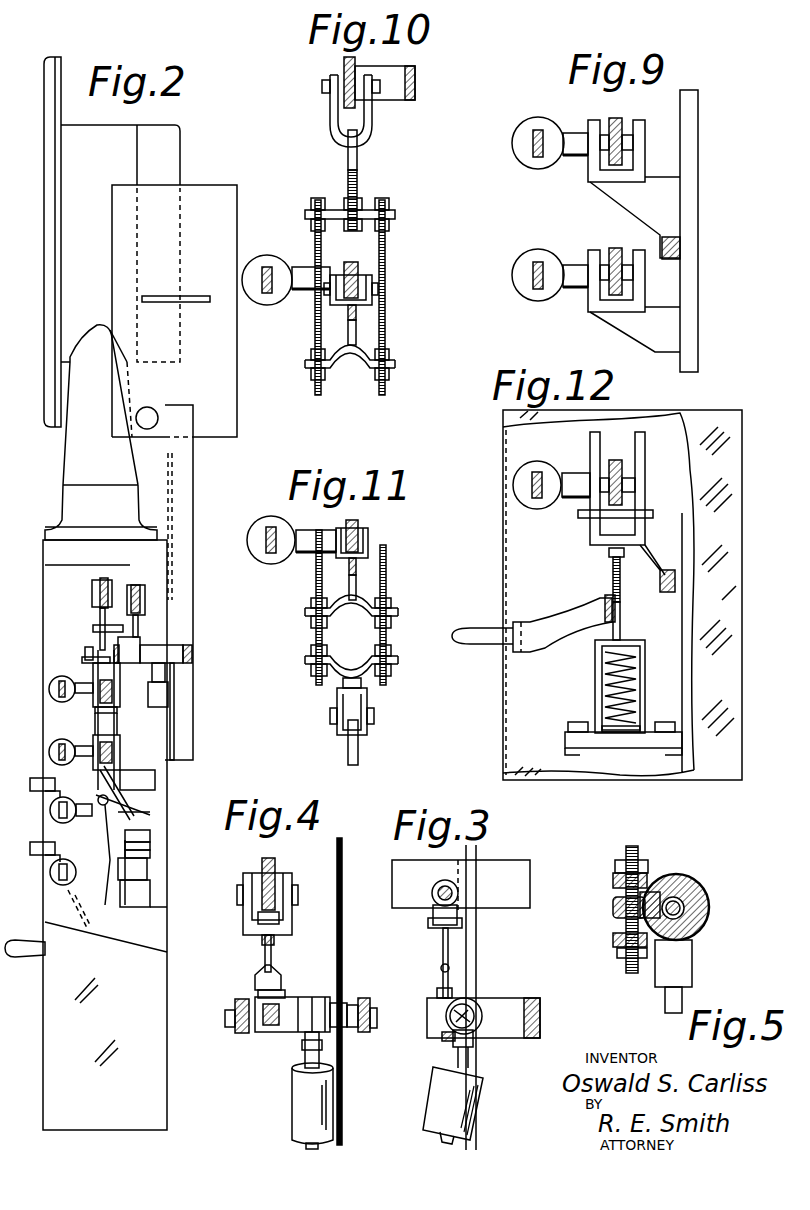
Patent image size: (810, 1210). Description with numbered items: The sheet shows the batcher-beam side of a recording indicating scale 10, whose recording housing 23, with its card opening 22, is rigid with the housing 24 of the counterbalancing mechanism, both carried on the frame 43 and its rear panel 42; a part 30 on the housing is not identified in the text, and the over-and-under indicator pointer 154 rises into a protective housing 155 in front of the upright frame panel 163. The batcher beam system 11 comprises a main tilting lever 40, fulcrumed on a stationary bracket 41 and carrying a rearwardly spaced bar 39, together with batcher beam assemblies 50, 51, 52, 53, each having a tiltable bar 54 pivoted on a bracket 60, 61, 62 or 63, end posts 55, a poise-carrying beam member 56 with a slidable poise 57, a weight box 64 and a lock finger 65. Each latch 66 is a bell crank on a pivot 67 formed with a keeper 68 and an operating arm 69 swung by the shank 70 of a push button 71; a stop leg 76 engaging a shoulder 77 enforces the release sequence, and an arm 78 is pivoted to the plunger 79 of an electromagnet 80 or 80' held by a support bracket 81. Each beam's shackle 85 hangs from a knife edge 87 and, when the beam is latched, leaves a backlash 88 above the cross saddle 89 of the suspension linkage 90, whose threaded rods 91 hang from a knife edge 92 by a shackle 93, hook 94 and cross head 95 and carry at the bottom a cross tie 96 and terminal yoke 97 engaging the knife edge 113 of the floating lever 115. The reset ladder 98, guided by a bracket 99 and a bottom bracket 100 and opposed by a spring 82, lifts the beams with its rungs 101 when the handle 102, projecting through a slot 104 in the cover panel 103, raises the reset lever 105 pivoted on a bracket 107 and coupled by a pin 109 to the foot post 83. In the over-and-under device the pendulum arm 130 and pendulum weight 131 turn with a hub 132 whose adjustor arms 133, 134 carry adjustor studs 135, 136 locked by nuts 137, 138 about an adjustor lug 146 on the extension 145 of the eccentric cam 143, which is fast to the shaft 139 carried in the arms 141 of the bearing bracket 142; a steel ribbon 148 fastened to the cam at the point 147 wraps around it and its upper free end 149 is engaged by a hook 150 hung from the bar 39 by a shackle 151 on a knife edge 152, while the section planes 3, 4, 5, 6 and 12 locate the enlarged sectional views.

In FIG. 4, the section planes 3— 3 is at (282, 1142).
In FIG. 3, the section plane 4— 4 is at (480, 1142).
In FIG. 4, the section plane 5— 5 is at (318, 1060).
In FIG. 4, the section line 6- 6 is at (234, 1015).
In FIG. 3, the section line 6- 6 is at (380, 1018).
In FIG. 2, the recording indicating scale 10 is at (204, 166).
In FIG. 2, the system of batcher beams 11 is at (52, 764).
In FIG. 2, the section plane 12— 12 is at (198, 654).
In FIG. 2, the opening 22 is at (196, 302).
In FIG. 2, the housing 23 is at (174, 311).
In FIG. 2, the housing 24 is at (112, 242).
In FIG. 2, the knob 30 is at (150, 407).
In FIG. 2, the rearwardly spaced bar 39 is at (136, 585).
In FIG. 10, the rearwardly spaced bar 39 is at (420, 88).
In FIG. 4, the rearwardly spaced bar 39 is at (270, 862).
In FIG. 3, the rearwardly spaced bar 39 is at (461, 884).
In FIG. 2, the main tilting lever 40 is at (105, 578).
In FIG. 10, the main tilting lever 40 is at (344, 68).
In FIG. 2, the stationary bracket 41 is at (95, 600).
In FIG. 2, the rear panel 42 is at (166, 950).
In FIG. 9, the rear panel 42 is at (698, 268).
In FIG. 12, the rear panel 42 is at (712, 552).
In FIG. 2, the frame 43 is at (105, 835).
In FIG. 12, the frame 43 is at (545, 750).
In FIG. 2, the batcher beam assembly 50 is at (56, 672).
In FIG. 10, the batcher beam assembly 50 is at (302, 298).
In FIG. 9, the batcher beam assembly 50 is at (566, 160).
In FIG. 2, the batcher beam assembly 51 is at (56, 745).
In FIG. 9, the batcher beam assembly 51 is at (566, 298).
In FIG. 2, the batcher beam assembly 52 is at (54, 825).
In FIG. 2, the batcher beam assembly 53 is at (52, 882).
In FIG. 12, the batcher beam assembly 53 is at (537, 512).
In FIG. 11, the batcher beam assembly 53 is at (306, 558).
In FIG. 10, the tiltable bar 54 is at (350, 262).
In FIG. 9, the tiltable bar 54 is at (615, 118).
In FIG. 12, the tiltable bar 54 is at (616, 460).
In FIG. 11, the tiltable bar 54 is at (358, 525).
In FIG. 2, the end posts 55 is at (78, 686).
In FIG. 10, the end posts 55 is at (300, 267).
In FIG. 9, the end posts 55 is at (575, 133).
In FIG. 12, the end posts 55 is at (572, 480).
In FIG. 11, the end posts 55 is at (312, 532).
In FIG. 2, the poise-carrying beam member 56 is at (58, 688).
In FIG. 10, the poise-carrying beam member 56 is at (267, 265).
In FIG. 9, the poise-carrying beam member 56 is at (537, 130).
In FIG. 12, the poise-carrying beam member 56 is at (535, 472).
In FIG. 11, the poise-carrying beam member 56 is at (270, 518).
In FIG. 2, the poise 57 is at (50, 683).
In FIG. 10, the poise 57 is at (246, 266).
In FIG. 9, the poise 57 is at (513, 143).
In FIG. 12, the poise 57 is at (540, 470).
In FIG. 11, the poise 57 is at (252, 526).
In FIG. 9, the bracket 60 is at (634, 189).
In FIG. 9, the bracket 61 is at (634, 301).
In FIG. 2, the bracket 62 is at (152, 783).
In FIG. 12, the bracket 63 is at (636, 530).
In FIG. 2, the weight box 64 is at (125, 905).
In FIG. 2, the lock finger 65 is at (140, 800).
In FIG. 2, the latch 66 is at (96, 822).
In FIG. 2, the pivot 67 is at (150, 825).
In FIG. 2, the keeper 68 is at (130, 808).
In FIG. 2, the operating arm 69 is at (135, 818).
In FIG. 2, the shank 70 is at (50, 784).
In FIG. 2, the push button 71 is at (45, 791).
In FIG. 2, the stop leg 76 is at (95, 850).
In FIG. 2, the shoulder 77 is at (100, 870).
In FIG. 2, the horizontally extended arm 78 is at (150, 842).
In FIG. 2, the core or plunger 79 is at (150, 855).
In FIG. 2, the electromagnet 80 is at (174, 832).
In FIG. 2, the electromagnet 80' is at (160, 870).
In FIG. 2, the support bracket 81 is at (150, 892).
In FIG. 2, the spring 82 is at (105, 640).
In FIG. 12, the spring 82 is at (605, 692).
In FIG. 12, the foot post 83 is at (613, 585).
In FIG. 10, the shackle 85 is at (352, 368).
In FIG. 11, the shackle 85 is at (368, 612).
In FIG. 10, the knife edge 87 is at (372, 290).
In FIG. 11, the knife edge 87 is at (368, 540).
In FIG. 11, the space or backlash 88 is at (355, 612).
In FIG. 10, the cross saddle 89 is at (375, 368).
In FIG. 11, the cross saddle 89 is at (398, 611).
In FIG. 10, the suspension linkage 90 is at (400, 278).
In FIG. 11, the suspension linkage 90 is at (403, 600).
In FIG. 10, the threaded vertical rods 91 is at (317, 392).
In FIG. 11, the threaded vertical rods 91 is at (386, 546).
In FIG. 10, the knife edge 92 is at (322, 86).
In FIG. 10, the shackle 93 is at (366, 126).
In FIG. 10, the hook 94 is at (358, 176).
In FIG. 10, the cross head 95 is at (395, 214).
In FIG. 11, the cross tie 96 is at (398, 664).
In FIG. 11, the terminal yoke 97 is at (367, 700).
In FIG. 2, the reset ladder 98 is at (95, 708).
In FIG. 12, the reset ladder 98 is at (609, 550).
In FIG. 2, the bracket 99 is at (95, 628).
In FIG. 12, the bottom bracket 100 is at (597, 666).
In FIG. 2, the rungs 101 is at (95, 722).
In FIG. 12, the rungs 101 is at (586, 515).
In FIG. 2, the handle 102 is at (24, 960).
In FIG. 12, the handle 102 is at (482, 625).
In FIG. 12, the cover panel 103 is at (506, 588).
In FIG. 12, the slot 104 is at (506, 660).
In FIG. 12, the reset lever 105 is at (562, 625).
In FIG. 12, the bracket 107 is at (650, 748).
In FIG. 12, the pin 109 is at (616, 608).
In FIG. 11, the knife edge 113 is at (374, 718).
In FIG. 11, the floating lever 115 is at (358, 750).
In FIG. 2, the pendulum arm 130 is at (162, 665).
In FIG. 4, the pendulum arm 130 is at (318, 1052).
In FIG. 3, the pendulum arm 130 is at (455, 1062).
In FIG. 5, the pendulum arm 130 is at (692, 960).
In FIG. 2, the pendulum weight 131 is at (168, 690).
In FIG. 4, the pendulum weight 131 is at (312, 1106).
In FIG. 3, the pendulum weight 131 is at (453, 1105).
In FIG. 2, the hub 132 is at (150, 640).
In FIG. 4, the hub 132 is at (325, 1000).
In FIG. 4, the adjustor arm 133 is at (290, 1005).
In FIG. 3, the adjustor arm 133 is at (438, 992).
In FIG. 5, the adjustor arm 133 is at (660, 890).
In FIG. 4, the adjustor arm 134 is at (290, 1035).
In FIG. 3, the adjustor arm 134 is at (442, 1042).
In FIG. 5, the adjustor arm 134 is at (655, 965).
In FIG. 5, the adjustor stud 135 is at (638, 848).
In FIG. 5, the adjustor stud 136 is at (626, 958).
In FIG. 5, the nut 137 is at (620, 865).
In FIG. 5, the nut 138 is at (613, 943).
In FIG. 2, the shaft 139 is at (160, 645).
In FIG. 5, the shaft 139 is at (709, 901).
In FIG. 2, the arms 141 is at (193, 645).
In FIG. 4, the arms 141 is at (241, 1035).
In FIG. 3, the arms 141 is at (522, 998).
In FIG. 3, the yoke shaped bearing bracket 142 is at (540, 1008).
In FIG. 2, the eccentric cam 143 is at (157, 711).
In FIG. 4, the eccentric cam 143 is at (255, 1035).
In FIG. 3, the eccentric cam 143 is at (464, 1003).
In FIG. 5, the eccentric cam 143 is at (690, 885).
In FIG. 4, the lateral hub-like extension 145 is at (275, 990).
In FIG. 3, the adjustor lug 146 is at (446, 1012).
In FIG. 5, the adjustor lug 146 is at (613, 905).
In FIG. 4, the fastening point 147 is at (255, 982).
In FIG. 3, the fastening point 147 is at (465, 975).
In FIG. 4, the flexible steel ribbon 148 is at (275, 1033).
In FIG. 3, the flexible steel ribbon 148 is at (473, 1047).
In FIG. 2, the upper free end 149 is at (150, 612).
In FIG. 4, the upper free end 149 is at (270, 960).
In FIG. 3, the upper free end 149 is at (442, 968).
In FIG. 4, the hook 150 is at (265, 962).
In FIG. 3, the hook 150 is at (443, 950).
In FIG. 2, the shackle 151 is at (145, 595).
In FIG. 4, the shackle 151 is at (290, 915).
In FIG. 3, the shackle 151 is at (433, 915).
In FIG. 2, the knife edge 152 is at (150, 580).
In FIG. 4, the knife edge 152 is at (285, 880).
In FIG. 3, the knife edge 152 is at (440, 885).
In FIG. 2, the over-and-under indicator pointer 154 is at (185, 490).
In FIG. 4, the over-and-under indicator pointer 154 is at (342, 925).
In FIG. 3, the over-and-under indicator pointer 154 is at (470, 945).
In FIG. 2, the protective housing 155 is at (186, 447).
In FIG. 2, the upright frame panel 163 is at (196, 705).